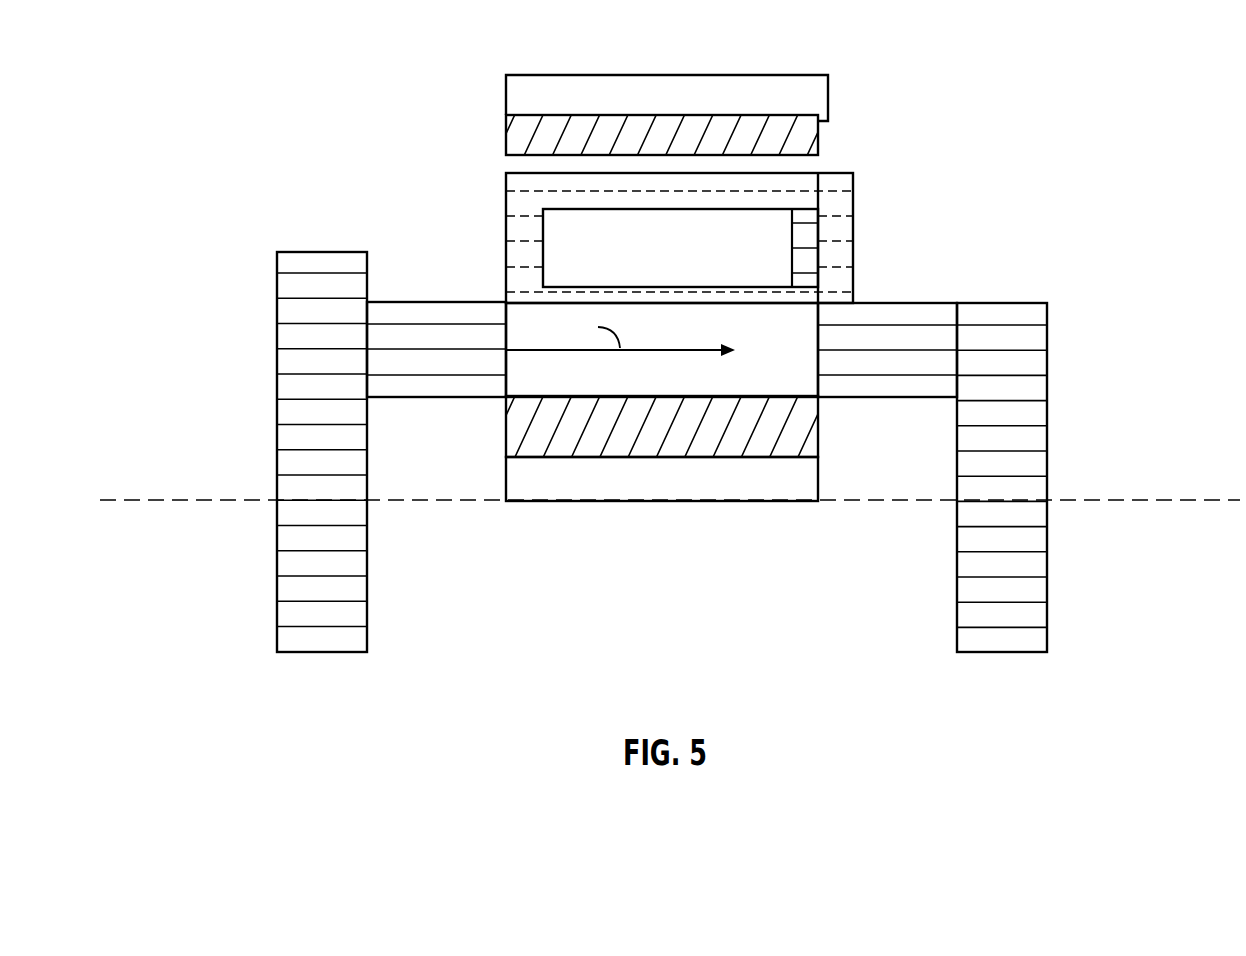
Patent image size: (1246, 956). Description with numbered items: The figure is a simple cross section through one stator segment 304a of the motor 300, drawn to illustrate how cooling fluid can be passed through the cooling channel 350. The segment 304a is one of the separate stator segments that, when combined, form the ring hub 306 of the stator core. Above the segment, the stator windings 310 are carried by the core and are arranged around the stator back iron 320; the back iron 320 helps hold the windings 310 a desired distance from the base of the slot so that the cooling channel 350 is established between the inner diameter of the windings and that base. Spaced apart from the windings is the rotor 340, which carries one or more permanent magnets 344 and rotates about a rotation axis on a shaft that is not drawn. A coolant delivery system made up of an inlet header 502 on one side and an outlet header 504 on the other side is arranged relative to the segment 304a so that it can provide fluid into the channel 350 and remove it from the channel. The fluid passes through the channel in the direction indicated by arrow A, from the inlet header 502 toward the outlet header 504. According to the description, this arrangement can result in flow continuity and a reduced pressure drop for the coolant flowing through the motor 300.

The motor 300 is at (339, 58).
The rotor 340 is at (828, 98).
The permanent magnets 344 is at (818, 142).
The stator windings 310 is at (506, 240).
The stator back iron 320 is at (792, 260).
The cooling channel 350 is at (798, 320).
The ring hub 306 is at (642, 458).
The stator segment 304a is at (538, 490).
The inlet header 502 is at (277, 383).
The outlet header 504 is at (1047, 420).